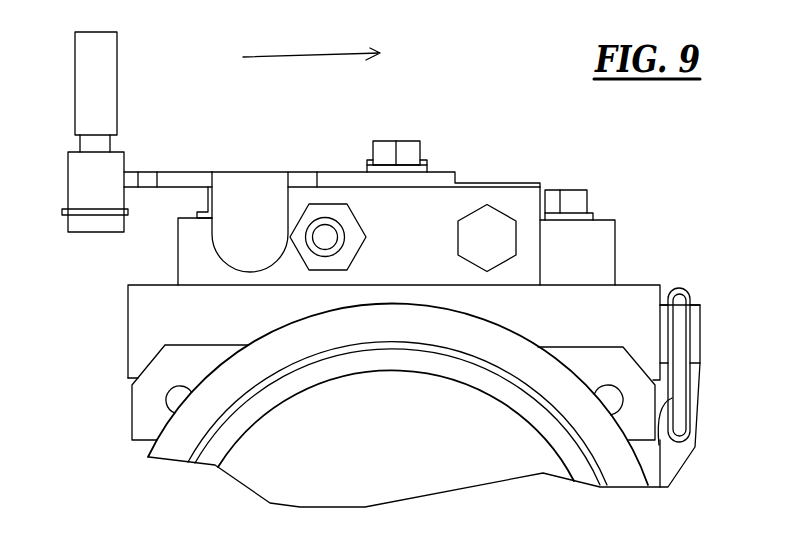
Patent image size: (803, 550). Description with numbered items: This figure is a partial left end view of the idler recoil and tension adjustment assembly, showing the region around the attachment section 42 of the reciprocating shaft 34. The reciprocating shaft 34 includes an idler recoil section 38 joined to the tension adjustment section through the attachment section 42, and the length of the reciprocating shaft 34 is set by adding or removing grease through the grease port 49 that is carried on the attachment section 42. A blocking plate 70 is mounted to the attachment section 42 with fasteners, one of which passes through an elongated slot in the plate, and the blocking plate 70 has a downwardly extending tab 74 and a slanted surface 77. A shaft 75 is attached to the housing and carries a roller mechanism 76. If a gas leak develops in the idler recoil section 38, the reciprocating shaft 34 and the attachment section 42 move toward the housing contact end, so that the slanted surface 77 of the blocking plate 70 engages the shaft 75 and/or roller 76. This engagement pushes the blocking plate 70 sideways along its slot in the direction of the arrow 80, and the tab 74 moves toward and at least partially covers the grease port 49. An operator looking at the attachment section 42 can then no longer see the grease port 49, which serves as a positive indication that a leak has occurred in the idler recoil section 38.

The reciprocating shaft 34 is at (600, 432).
The idler recoil section 38 is at (567, 360).
The attachment section 42 is at (545, 270).
The grease port 49 is at (324, 237).
The blocking plate 70 is at (236, 173).
The tab 74 is at (238, 240).
The shaft 75 is at (90, 55).
The roller mechanism 76 is at (80, 187).
The slanted surface 77 is at (133, 184).
The arrow 80 is at (312, 52).